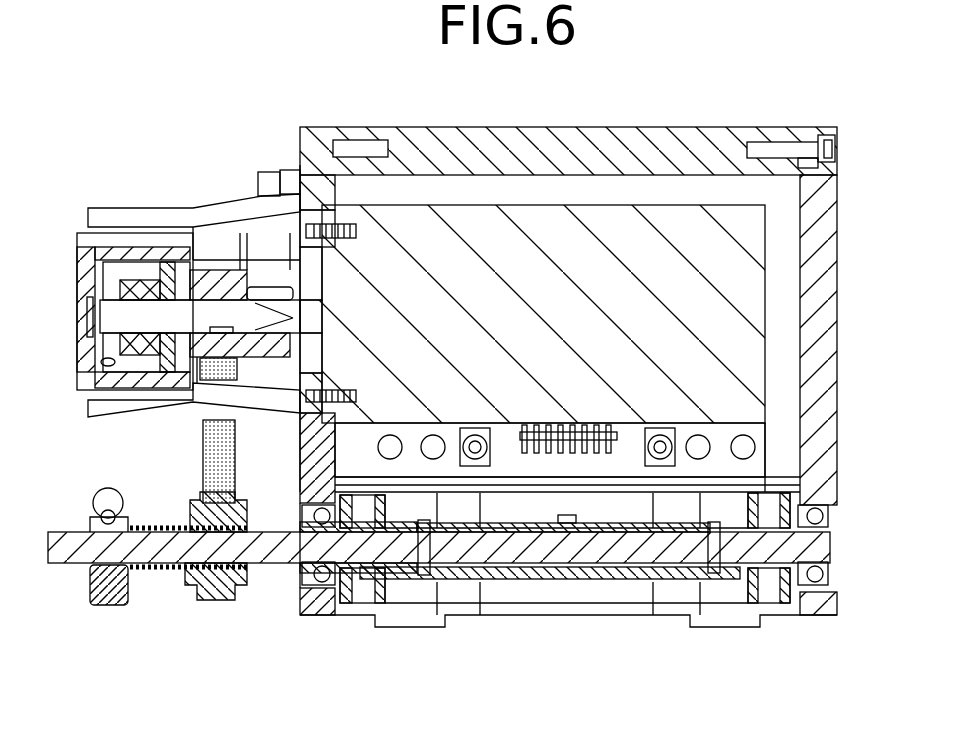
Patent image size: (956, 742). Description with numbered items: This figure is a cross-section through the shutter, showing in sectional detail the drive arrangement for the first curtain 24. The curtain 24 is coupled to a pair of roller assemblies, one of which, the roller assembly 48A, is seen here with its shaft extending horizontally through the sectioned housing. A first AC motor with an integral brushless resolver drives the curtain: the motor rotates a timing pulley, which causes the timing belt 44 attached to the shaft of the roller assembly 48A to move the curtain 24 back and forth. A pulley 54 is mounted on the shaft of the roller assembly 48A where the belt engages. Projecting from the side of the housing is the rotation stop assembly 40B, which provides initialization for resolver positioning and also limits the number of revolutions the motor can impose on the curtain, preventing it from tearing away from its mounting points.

The curtain 24 is at (517, 585).
The rotation stop assembly 40B is at (160, 207).
The timing belt 44 is at (215, 450).
The roller assembly 48A is at (622, 550).
The pulley 54 is at (205, 577).